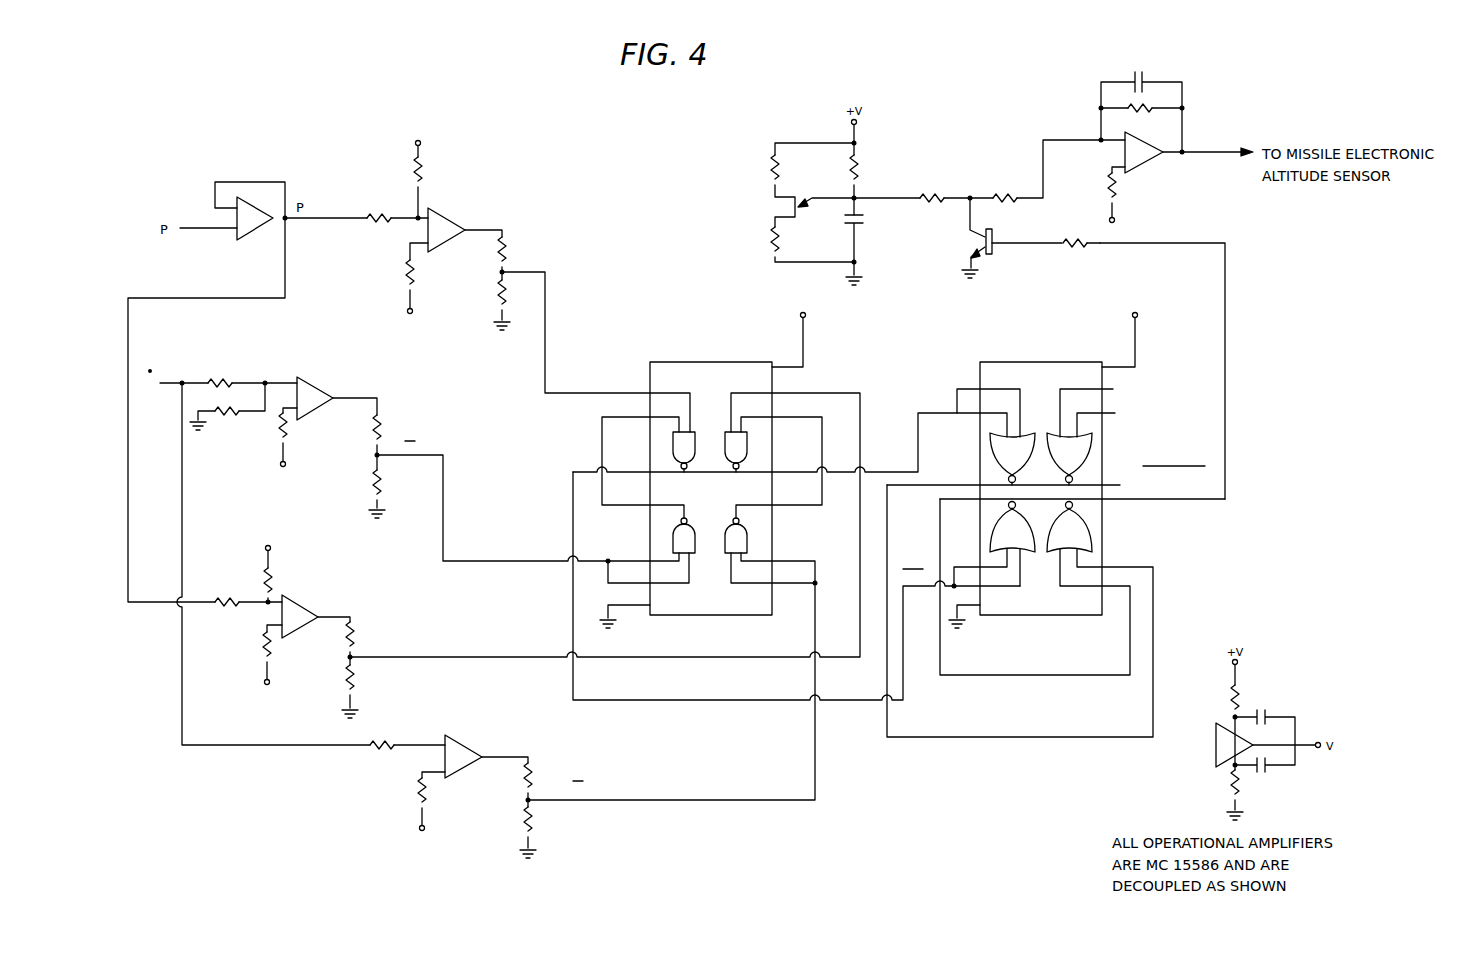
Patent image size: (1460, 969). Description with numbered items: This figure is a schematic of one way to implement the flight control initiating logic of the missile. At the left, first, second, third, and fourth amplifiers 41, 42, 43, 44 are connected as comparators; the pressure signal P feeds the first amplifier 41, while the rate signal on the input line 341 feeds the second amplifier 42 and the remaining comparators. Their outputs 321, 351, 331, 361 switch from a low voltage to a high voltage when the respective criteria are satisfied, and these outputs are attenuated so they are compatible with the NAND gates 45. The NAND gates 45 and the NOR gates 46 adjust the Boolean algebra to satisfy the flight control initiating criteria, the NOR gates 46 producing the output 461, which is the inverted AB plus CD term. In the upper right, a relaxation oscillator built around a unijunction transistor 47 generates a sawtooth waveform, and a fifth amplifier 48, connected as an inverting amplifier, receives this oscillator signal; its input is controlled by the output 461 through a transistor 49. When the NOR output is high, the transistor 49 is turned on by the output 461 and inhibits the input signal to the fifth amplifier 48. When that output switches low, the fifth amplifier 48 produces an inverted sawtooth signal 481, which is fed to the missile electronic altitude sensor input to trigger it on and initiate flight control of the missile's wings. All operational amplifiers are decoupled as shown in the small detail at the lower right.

The first amplifier 41 is at (445, 221).
The second amplifier 42 is at (318, 388).
The third amplifier 43 is at (303, 606).
The fourth amplifier 44 is at (470, 751).
The NAND gates 45 is at (690, 363).
The NOR gates 46 is at (1017, 363).
The unijunction transistor 47 is at (801, 201).
The fifth amplifier 48 is at (1150, 162).
The transistor 49 is at (997, 241).
The output 321 is at (547, 331).
The output 331 is at (460, 658).
The P-dot input line 341 is at (172, 381).
The output 351 is at (477, 562).
The output 361 is at (718, 798).
The output of NOR gates 461 is at (1227, 362).
The sawtooth signal 481 is at (1197, 153).